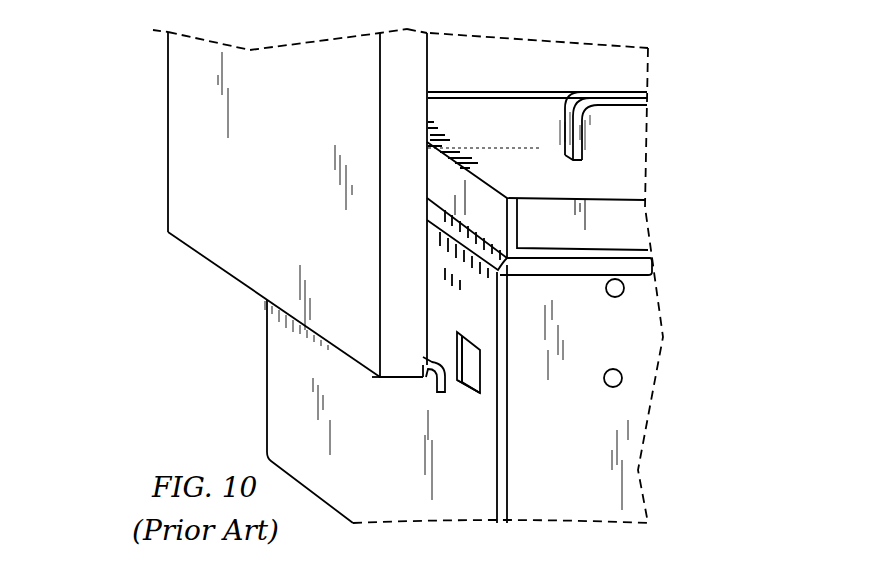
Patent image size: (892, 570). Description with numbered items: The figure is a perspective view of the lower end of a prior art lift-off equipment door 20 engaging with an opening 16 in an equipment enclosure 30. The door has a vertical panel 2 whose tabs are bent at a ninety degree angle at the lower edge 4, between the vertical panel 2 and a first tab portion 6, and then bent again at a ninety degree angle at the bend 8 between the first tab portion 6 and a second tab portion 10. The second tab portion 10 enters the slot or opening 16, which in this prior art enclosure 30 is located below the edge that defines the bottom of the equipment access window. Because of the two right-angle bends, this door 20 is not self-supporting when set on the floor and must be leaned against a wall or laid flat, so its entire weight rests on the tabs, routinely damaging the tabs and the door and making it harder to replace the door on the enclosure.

The prior art panel assembly 20 is at (157, 162).
The vertical panel 2 is at (277, 187).
The lower edge 4 is at (233, 280).
The lower panel 30 is at (375, 444).
The first tab portion 6 is at (428, 390).
The bend 8 is at (441, 365).
The second tab portion 10 is at (450, 384).
The slot or opening 16 is at (480, 377).